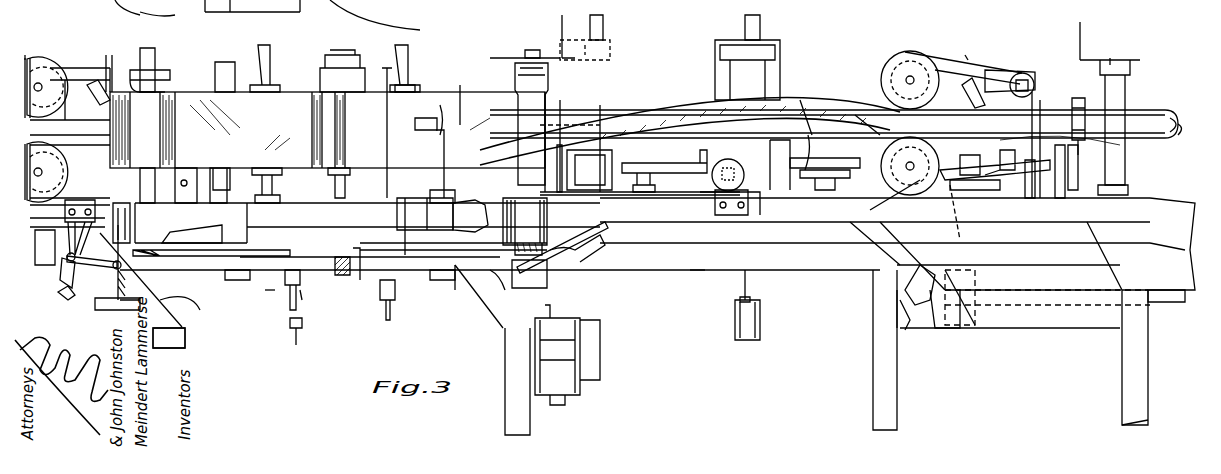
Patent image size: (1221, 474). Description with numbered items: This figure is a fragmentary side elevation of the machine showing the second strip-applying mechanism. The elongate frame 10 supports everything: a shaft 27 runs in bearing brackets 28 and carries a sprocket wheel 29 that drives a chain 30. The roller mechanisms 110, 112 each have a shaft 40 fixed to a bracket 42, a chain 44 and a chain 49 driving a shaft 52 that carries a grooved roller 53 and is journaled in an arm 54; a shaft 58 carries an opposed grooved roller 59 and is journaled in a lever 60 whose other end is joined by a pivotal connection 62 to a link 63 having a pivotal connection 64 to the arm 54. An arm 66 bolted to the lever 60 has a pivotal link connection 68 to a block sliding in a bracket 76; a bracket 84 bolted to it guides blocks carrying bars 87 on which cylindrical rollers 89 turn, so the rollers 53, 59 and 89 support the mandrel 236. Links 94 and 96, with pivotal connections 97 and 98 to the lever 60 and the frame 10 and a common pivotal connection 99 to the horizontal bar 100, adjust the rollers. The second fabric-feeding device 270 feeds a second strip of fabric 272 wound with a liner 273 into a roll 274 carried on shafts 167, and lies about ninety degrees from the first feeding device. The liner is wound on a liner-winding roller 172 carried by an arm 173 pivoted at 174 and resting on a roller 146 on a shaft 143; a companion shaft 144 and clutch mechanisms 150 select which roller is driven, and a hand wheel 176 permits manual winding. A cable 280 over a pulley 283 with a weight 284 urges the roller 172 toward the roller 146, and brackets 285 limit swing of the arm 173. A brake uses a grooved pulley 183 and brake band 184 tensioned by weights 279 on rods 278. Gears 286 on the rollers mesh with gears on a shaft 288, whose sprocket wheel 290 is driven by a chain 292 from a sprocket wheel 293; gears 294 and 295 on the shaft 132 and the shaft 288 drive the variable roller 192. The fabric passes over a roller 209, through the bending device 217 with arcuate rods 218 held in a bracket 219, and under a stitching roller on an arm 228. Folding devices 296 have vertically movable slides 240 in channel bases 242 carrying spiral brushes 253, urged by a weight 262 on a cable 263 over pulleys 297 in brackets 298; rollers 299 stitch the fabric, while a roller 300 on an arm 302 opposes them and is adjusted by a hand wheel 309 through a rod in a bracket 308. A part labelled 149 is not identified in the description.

The elongate frame 10 is at (1148, 365).
The shaft 27 is at (1172, 305).
The bearing brackets 28 is at (975, 325).
The sprocket wheel 29 is at (940, 330).
The chain 30 is at (920, 275).
The shaft 40 is at (92, 225).
The bracket 42 is at (1032, 98).
The chain 44 is at (1005, 170).
The chain 49 is at (1032, 80).
The shaft 52 is at (40, 85).
The grooved roller 53 is at (28, 75).
The arm 54 is at (70, 75).
The shaft 58 is at (35, 205).
The second grooved roller 59 is at (30, 150).
The lever 60 is at (975, 185).
The pivotal connection 62 is at (1000, 180).
The link 63 is at (1005, 75).
The pivotal connection 64 is at (100, 85).
The arm 66 is at (1030, 180).
The pivotal link connection 68 is at (1085, 165).
The bracket 76 is at (1060, 190).
The bracket 84 is at (1090, 180).
The bars 87 is at (1100, 145).
The rollers 89 is at (1085, 100).
The link 94 is at (55, 230).
The link 96 is at (60, 298).
The pivotal connection 97 is at (870, 210).
The pivotal connection 98 is at (905, 310).
The common pivotal connection 99 is at (60, 268).
The horizontally extending bar 100 is at (700, 270).
The roller mechanism 110 is at (30, 55).
The roller mechanism 112 is at (968, 55).
The shaft 132 is at (330, 185).
The shaft 143 is at (150, 50).
The shaft 144 is at (530, 58).
The roller 146 is at (165, 72).
The foot 149 is at (182, 330).
The clutch mechanisms 150 is at (112, 268).
The shafts 167 is at (272, 70).
The liner-winding roller 172 is at (230, 10).
The arm 173 is at (475, 220).
The pivotal mounting 174 is at (343, 21).
The hand wheel 176 is at (505, 58).
The grooved pulley 183 is at (235, 270).
The flexible brake band 184 is at (275, 280).
The variable roller 192 is at (355, 85).
The roller 209 is at (226, 75).
The fabric bending device 217 is at (388, 65).
The arcuate parallel rods 218 is at (400, 92).
The bracket 219 is at (400, 270).
The arm 228 is at (405, 120).
The elongate mandrel 236 is at (1175, 130).
The slide 240 is at (735, 45).
The channel base 242 is at (745, 25).
The stiff spiral brush 253 is at (520, 130).
The weight 262 is at (605, 360).
The cable 263 is at (610, 278).
The second fabric-feeding device 270 is at (275, 290).
The second strip of fabric 272 is at (460, 85).
The liner 273 is at (158, 21).
The roll 274 is at (252, 14).
The rods 278 is at (295, 320).
The weights 279 is at (300, 300).
The cable 280 is at (600, 318).
The pulley 283 is at (515, 252).
The weight 284 is at (96, 302).
The brackets 285 is at (403, 15).
The gears 286 is at (190, 312).
The shaft 288 is at (228, 257).
The sprocket wheel 290 is at (455, 275).
The chain 292 is at (435, 190).
The sprocket wheel 293 is at (440, 140).
The gear 294 is at (355, 280).
The gear 295 is at (340, 270).
The folding devices 296 is at (705, 100).
The pulleys 297 is at (605, 25).
The bracket 298 is at (590, 30).
The rollers 299 is at (455, 100).
The roller 300 is at (815, 175).
The arm 302 is at (762, 160).
The bracket 308 is at (748, 200).
The hand wheel 309 is at (710, 198).